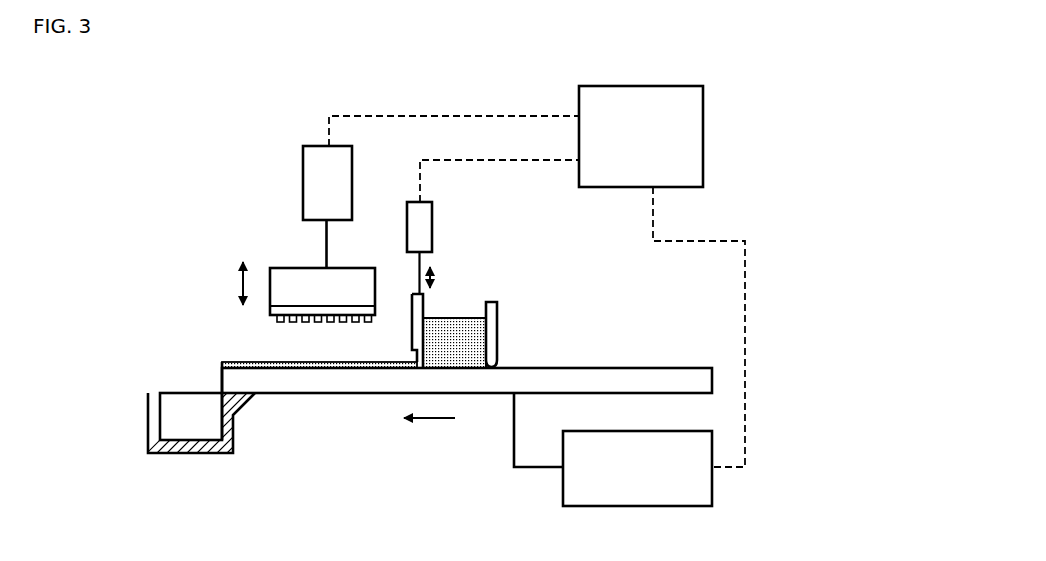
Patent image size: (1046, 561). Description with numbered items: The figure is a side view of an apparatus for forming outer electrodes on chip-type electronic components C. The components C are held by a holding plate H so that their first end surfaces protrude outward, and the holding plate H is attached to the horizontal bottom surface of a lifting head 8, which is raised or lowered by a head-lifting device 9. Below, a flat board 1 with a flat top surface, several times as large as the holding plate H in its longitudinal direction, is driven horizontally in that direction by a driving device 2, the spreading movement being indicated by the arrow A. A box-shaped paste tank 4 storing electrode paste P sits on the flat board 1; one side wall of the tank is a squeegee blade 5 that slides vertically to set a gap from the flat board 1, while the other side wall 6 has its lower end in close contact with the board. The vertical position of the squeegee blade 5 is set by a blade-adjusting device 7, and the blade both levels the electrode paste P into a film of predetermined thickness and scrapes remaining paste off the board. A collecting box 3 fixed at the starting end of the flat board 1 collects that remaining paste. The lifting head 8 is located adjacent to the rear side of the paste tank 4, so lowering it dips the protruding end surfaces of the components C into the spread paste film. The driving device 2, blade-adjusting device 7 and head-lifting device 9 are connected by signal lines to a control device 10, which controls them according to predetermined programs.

The flat board 1 is at (337, 395).
The driving device 2 is at (635, 508).
The collecting box 3 is at (148, 420).
The paste tank 4 is at (512, 294).
The squeegee blade 5 is at (413, 322).
The other side wall 6 is at (498, 326).
The blade-adjusting device 7 is at (434, 210).
The lifting head 8 is at (310, 278).
The head-lifting device 9 is at (312, 166).
The control device 10 is at (704, 143).
The holding plate H is at (284, 312).
The electronic components C is at (300, 322).
The electrode paste P is at (458, 316).
The arrow A is at (428, 425).